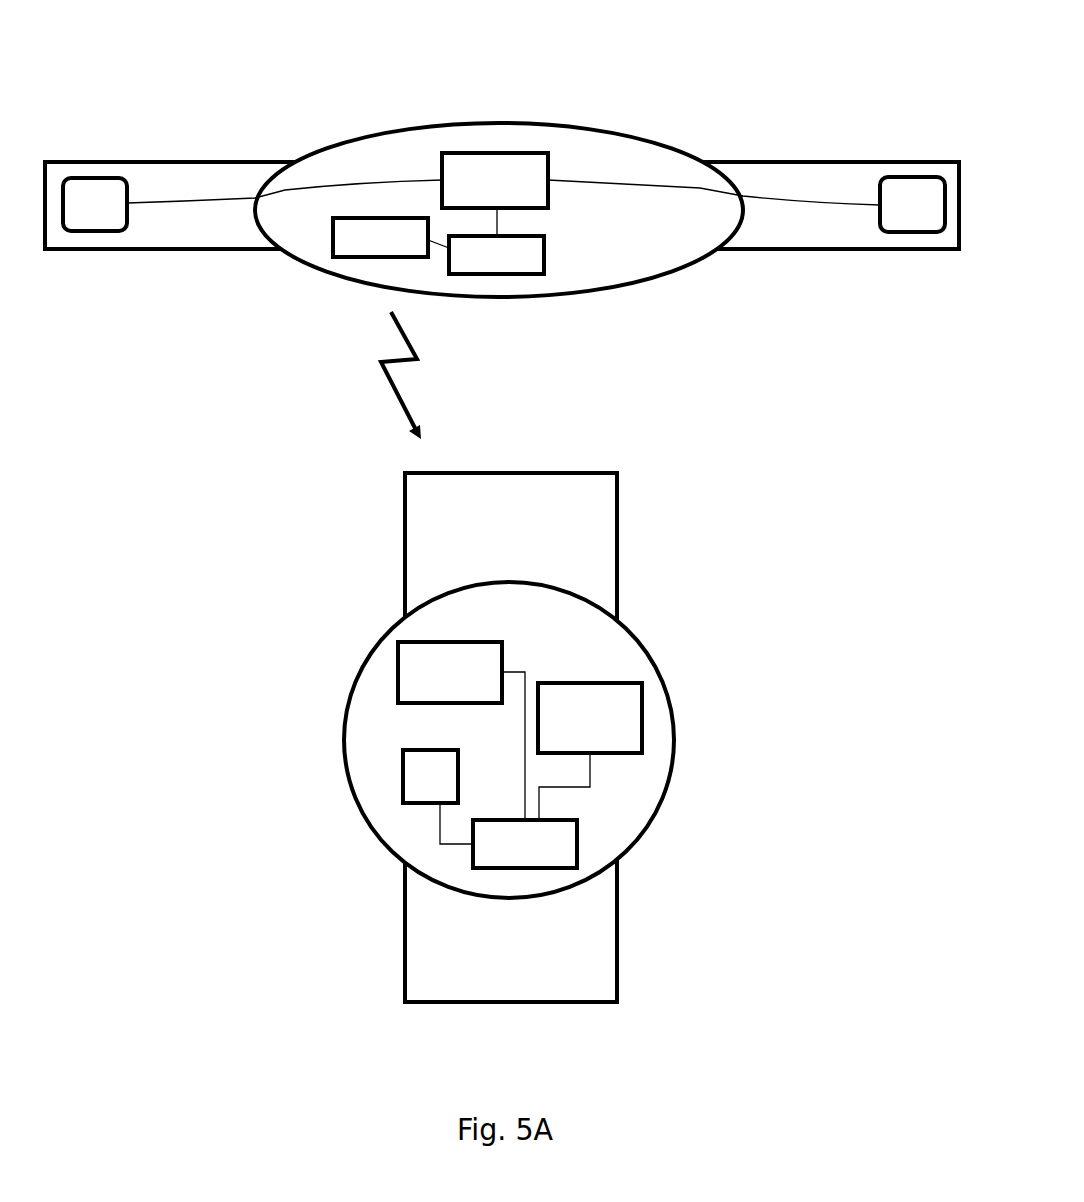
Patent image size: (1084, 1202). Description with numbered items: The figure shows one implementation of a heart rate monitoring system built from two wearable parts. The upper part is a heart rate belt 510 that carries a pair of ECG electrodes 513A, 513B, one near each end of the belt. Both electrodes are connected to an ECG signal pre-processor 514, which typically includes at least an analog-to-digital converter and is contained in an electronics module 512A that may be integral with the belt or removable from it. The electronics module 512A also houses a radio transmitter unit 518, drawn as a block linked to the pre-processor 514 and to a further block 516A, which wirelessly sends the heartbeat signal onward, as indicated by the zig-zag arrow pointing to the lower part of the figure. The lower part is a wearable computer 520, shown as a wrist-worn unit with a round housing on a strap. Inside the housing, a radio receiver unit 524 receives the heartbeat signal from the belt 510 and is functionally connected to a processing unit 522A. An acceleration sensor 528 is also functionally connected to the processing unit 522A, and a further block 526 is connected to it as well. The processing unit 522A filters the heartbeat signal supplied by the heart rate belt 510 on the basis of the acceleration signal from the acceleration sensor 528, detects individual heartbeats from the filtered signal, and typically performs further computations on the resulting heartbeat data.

The heart rate belt 510 is at (298, 94).
The electronics module 512A is at (662, 140).
The ECG electrode 513A is at (94, 178).
The ECG electrode 513B is at (913, 177).
The ECG signal pre-processor 514 is at (495, 153).
The communication module 516A is at (497, 274).
The radio transmitter unit 518 is at (382, 257).
The wearable computer 520 is at (339, 552).
The processing unit 522A is at (577, 844).
The radio receiver unit 524 is at (398, 672).
The memory 526 is at (642, 718).
The acceleration sensor 528 is at (403, 776).